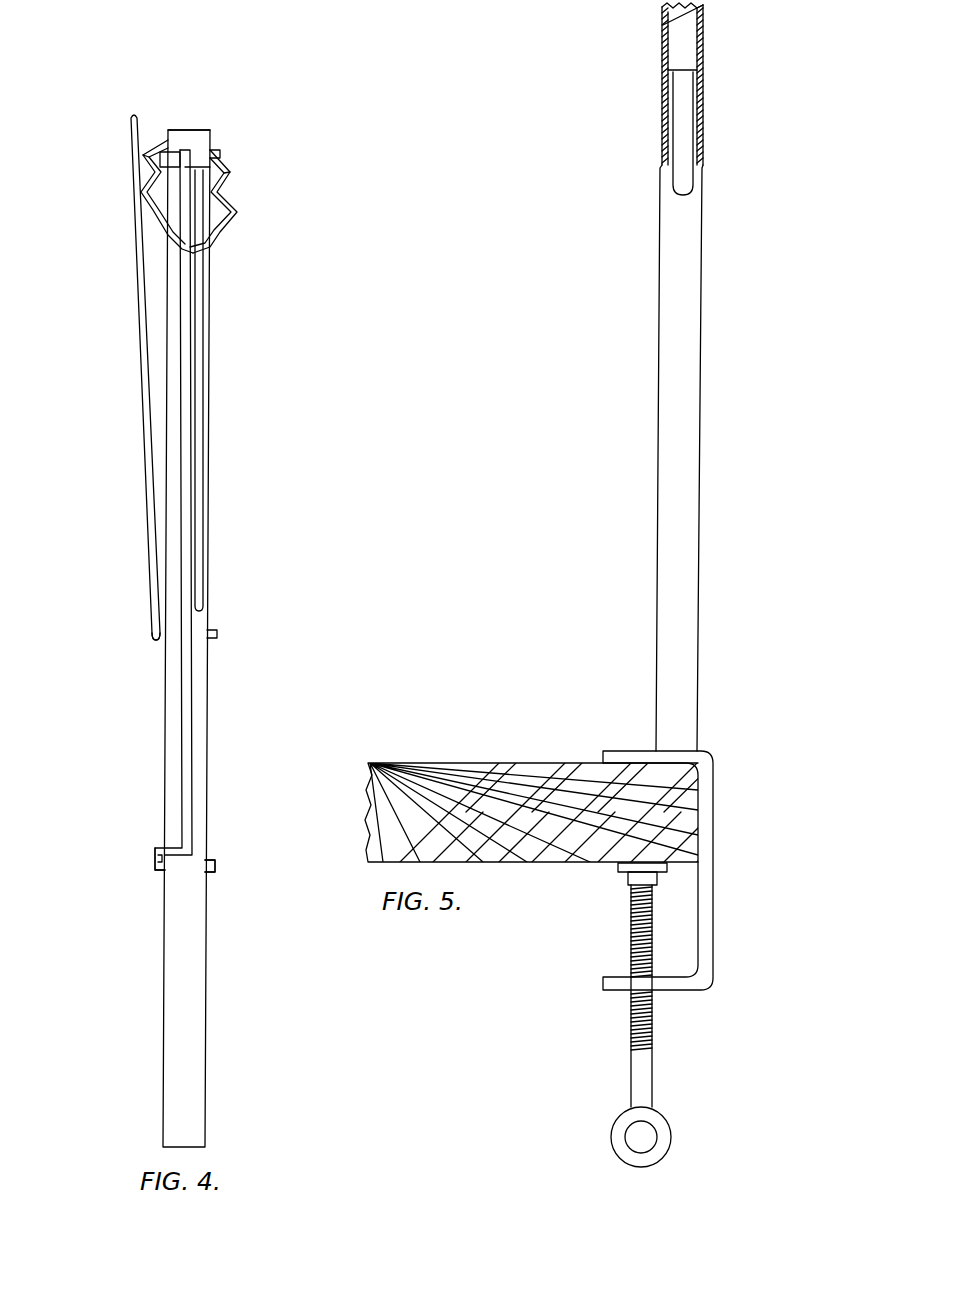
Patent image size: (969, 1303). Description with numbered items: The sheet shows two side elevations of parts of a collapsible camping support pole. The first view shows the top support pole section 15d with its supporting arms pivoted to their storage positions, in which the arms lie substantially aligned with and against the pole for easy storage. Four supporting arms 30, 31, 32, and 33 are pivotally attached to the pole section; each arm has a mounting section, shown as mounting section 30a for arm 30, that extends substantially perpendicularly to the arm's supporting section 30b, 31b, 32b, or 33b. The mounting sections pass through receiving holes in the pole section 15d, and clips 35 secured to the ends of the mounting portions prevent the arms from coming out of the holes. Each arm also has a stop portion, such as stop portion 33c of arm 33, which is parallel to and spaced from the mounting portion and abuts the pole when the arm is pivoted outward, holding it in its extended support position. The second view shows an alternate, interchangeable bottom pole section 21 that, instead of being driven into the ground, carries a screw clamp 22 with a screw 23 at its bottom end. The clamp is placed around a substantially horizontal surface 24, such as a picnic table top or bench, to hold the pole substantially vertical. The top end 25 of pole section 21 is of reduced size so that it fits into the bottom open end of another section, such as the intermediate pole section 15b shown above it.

In FIG. 5, the intermediate pole section 15b is at (703, 5).
In FIG. 4, the top support pole section 15d is at (200, 677).
In FIG. 5, the bottom pole section 21 is at (690, 413).
In FIG. 5, the screw clamp 22 is at (707, 890).
In FIG. 5, the screw 23 is at (652, 1015).
In FIG. 5, the horizontal surface 24 is at (477, 777).
In FIG. 5, the top end of pole section 25 is at (682, 133).
In FIG. 4, the supporting arm 30 is at (198, 318).
In FIG. 4, the mounting section 30a is at (219, 155).
In FIG. 4, the supporting section 30b is at (197, 337).
In FIG. 4, the supporting arm 31 is at (237, 225).
In FIG. 4, the supporting section 31b is at (233, 200).
In FIG. 4, the supporting arm 32 is at (153, 217).
In FIG. 4, the supporting section 32b is at (145, 156).
In FIG. 4, the supporting arm 33 is at (187, 753).
In FIG. 4, the supporting section 33b is at (185, 657).
In FIG. 4, the stop portion 33c is at (165, 850).
In FIG. 4, the clip 35 is at (210, 133).